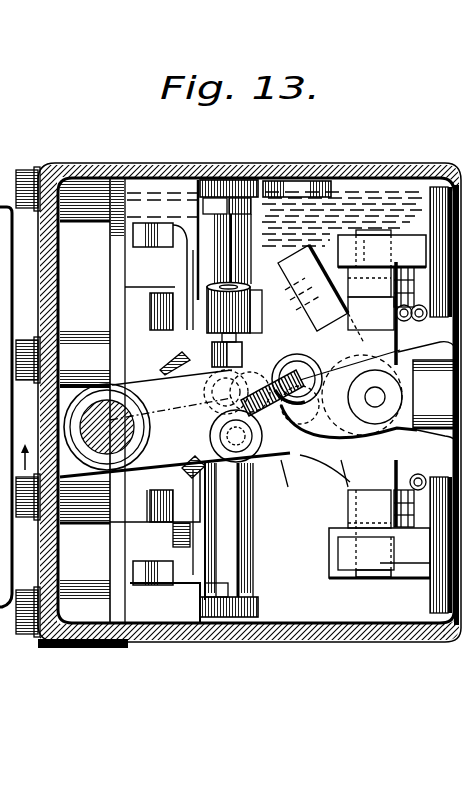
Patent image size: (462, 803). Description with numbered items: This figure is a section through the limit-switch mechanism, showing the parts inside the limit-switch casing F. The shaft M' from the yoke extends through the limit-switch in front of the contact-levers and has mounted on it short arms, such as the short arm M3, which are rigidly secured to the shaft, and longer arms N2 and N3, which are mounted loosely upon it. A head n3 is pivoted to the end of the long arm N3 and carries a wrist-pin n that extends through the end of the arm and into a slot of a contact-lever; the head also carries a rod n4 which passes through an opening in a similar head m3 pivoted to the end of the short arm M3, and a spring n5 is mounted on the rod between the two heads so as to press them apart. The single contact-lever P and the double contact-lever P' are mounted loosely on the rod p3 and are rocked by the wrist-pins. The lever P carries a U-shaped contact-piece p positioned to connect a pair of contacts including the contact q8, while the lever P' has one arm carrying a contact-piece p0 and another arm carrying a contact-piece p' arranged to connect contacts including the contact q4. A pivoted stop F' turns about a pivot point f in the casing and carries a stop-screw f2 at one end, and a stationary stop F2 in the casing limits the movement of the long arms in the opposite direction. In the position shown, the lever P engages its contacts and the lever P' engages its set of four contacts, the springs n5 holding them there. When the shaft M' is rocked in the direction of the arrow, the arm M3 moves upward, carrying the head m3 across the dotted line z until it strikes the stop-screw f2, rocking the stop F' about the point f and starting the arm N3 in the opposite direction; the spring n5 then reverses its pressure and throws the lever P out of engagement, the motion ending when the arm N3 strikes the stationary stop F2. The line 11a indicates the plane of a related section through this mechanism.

The limit-switch casing F is at (230, 382).
The pivoted stop F' is at (197, 310).
The stationary stop F2 is at (233, 243).
The pivot point f is at (160, 305).
The stop-screw f2 is at (152, 318).
The shaft M' is at (107, 390).
The short arm M3 is at (215, 436).
The head m3 is at (230, 440).
The long arm N2 is at (348, 456).
The long arm N3 is at (276, 378).
The wrist-pin n is at (362, 420).
The head n3 is at (434, 381).
The rod n4 is at (160, 366).
The spring n5 is at (292, 381).
The dotted line z is at (185, 401).
The single contact-lever P is at (332, 394).
The double contact-lever P' is at (379, 424).
The contact-piece p is at (382, 271).
The contact-piece p0 is at (321, 294).
The contact-piece p' is at (379, 587).
The rod p3 is at (375, 398).
The contact q4 is at (374, 560).
The contact q8 is at (364, 268).
The section line 11a is at (37, 443).